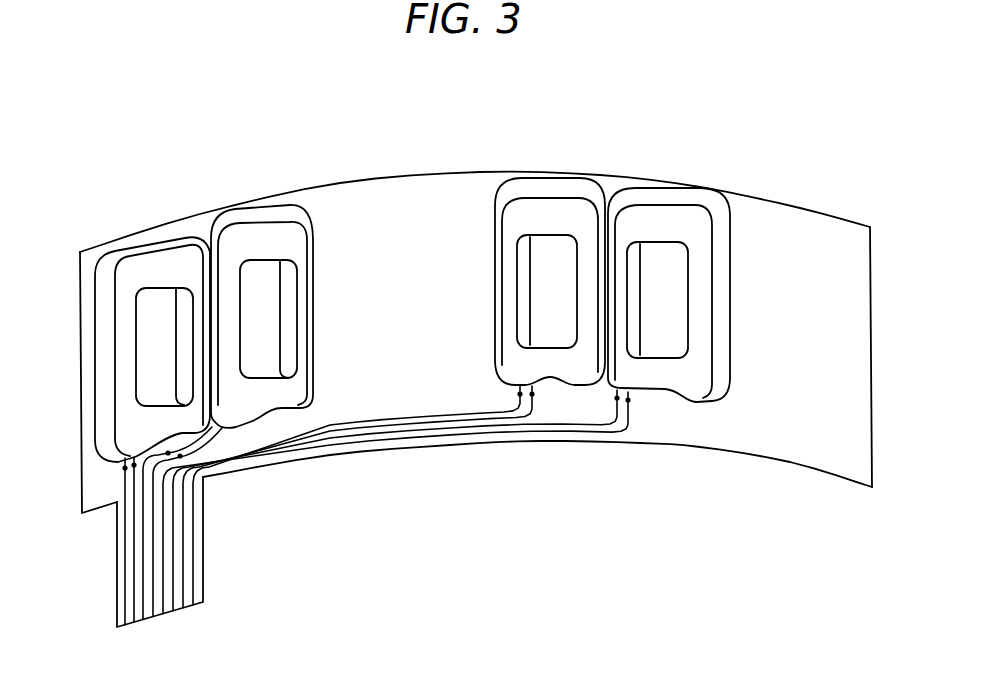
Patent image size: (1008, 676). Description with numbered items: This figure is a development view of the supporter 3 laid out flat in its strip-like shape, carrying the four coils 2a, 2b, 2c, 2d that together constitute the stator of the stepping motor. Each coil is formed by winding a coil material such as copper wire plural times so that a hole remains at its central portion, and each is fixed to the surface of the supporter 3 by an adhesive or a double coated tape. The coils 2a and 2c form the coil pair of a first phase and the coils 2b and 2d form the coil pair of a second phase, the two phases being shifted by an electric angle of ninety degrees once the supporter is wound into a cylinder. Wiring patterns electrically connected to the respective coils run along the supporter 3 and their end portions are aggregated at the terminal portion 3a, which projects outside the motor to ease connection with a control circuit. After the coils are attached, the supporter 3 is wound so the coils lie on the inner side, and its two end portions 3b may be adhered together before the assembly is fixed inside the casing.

The coil 2a is at (253, 217).
The coil 2b is at (160, 238).
The coil 2c is at (673, 197).
The coil 2d is at (548, 188).
The supporter 3 is at (840, 240).
The terminal portion 3a is at (203, 560).
The end portions 3b is at (90, 383).